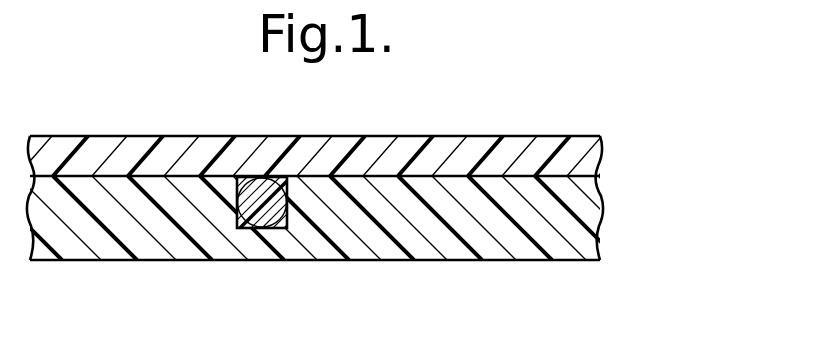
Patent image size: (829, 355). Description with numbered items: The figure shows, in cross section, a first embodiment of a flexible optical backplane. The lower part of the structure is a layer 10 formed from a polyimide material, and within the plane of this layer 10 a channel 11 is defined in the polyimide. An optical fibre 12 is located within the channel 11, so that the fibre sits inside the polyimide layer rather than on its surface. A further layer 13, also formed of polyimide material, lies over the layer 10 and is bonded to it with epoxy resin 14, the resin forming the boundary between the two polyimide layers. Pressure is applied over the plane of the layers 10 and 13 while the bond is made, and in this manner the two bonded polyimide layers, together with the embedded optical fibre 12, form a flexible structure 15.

The layer 10 is at (568, 227).
The channel 11 is at (248, 222).
The optical fibre 12 is at (278, 230).
The further layer 13 is at (580, 157).
The epoxy resin 14 is at (530, 176).
The flexible structure 15 is at (627, 186).